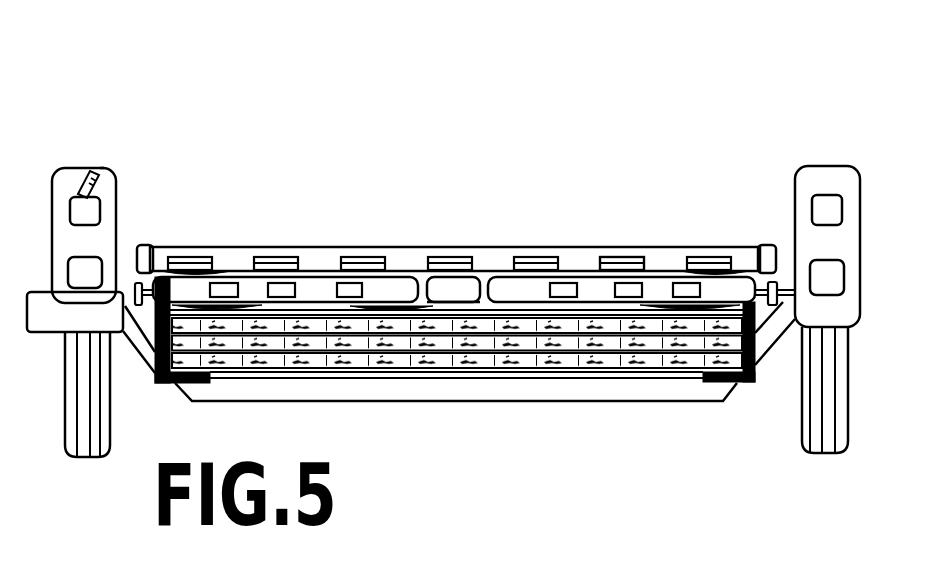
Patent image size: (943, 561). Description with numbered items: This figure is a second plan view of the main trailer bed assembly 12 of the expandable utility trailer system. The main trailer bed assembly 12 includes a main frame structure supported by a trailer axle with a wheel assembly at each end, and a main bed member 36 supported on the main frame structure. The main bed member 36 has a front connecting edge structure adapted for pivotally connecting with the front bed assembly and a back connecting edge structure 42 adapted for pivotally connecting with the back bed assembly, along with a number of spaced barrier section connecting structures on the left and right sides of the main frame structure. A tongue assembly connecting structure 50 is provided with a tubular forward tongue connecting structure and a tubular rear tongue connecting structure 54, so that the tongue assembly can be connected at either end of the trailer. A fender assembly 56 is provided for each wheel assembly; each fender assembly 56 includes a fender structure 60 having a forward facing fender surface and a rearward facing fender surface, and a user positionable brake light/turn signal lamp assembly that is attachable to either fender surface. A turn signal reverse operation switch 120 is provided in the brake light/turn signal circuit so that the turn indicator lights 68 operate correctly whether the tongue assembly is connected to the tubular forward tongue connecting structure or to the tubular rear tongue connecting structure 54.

The main trailer bed assembly 12 is at (448, 279).
The main bed member 36 is at (648, 244).
The back connecting edge structure 42 is at (368, 246).
The tongue assembly connecting structure 50 is at (578, 199).
The tubular rear tongue connecting structure 54 is at (476, 272).
The fender assembly 56 is at (52, 208).
The fender structure 60 is at (115, 177).
The turn indicator lights 68 is at (85, 213).
The turn signal reverse operation switch 120 is at (95, 180).